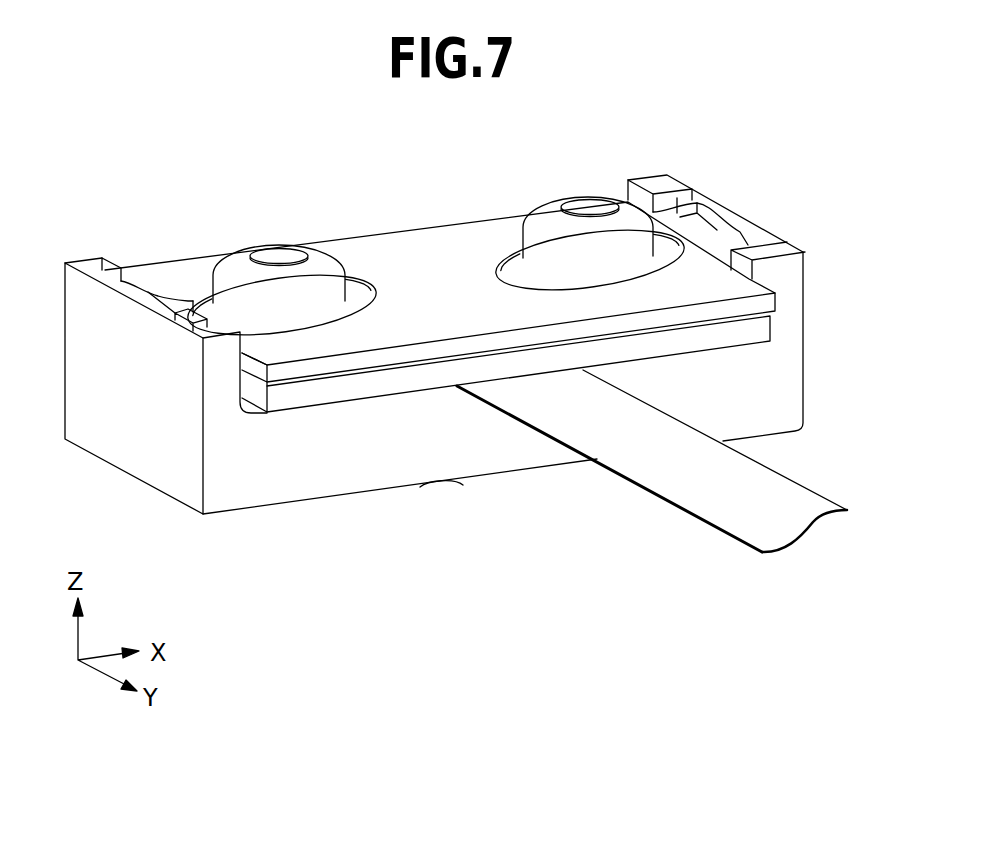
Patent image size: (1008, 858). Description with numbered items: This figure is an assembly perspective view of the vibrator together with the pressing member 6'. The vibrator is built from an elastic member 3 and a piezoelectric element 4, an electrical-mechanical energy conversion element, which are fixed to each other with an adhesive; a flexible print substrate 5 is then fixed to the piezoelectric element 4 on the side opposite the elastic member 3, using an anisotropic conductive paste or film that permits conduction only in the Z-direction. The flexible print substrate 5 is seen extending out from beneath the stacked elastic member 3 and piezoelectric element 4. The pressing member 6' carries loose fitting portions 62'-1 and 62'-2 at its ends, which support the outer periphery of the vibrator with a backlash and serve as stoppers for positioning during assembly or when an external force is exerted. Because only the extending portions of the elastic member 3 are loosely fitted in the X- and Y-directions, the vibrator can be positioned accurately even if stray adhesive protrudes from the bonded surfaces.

The elastic member 3 is at (748, 304).
The piezoelectric element 4 is at (748, 329).
The flexible print substrate 5 is at (678, 483).
The pressing member 6' is at (435, 382).
The loose fitting portion 62'-1 is at (704, 185).
The loose fitting portion 62'-2 is at (154, 264).